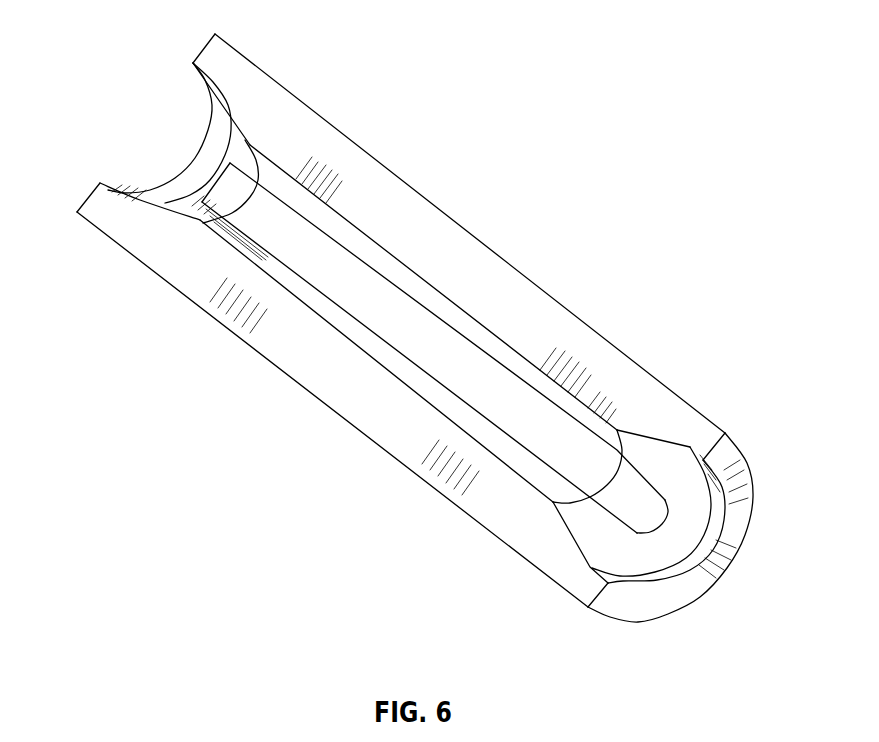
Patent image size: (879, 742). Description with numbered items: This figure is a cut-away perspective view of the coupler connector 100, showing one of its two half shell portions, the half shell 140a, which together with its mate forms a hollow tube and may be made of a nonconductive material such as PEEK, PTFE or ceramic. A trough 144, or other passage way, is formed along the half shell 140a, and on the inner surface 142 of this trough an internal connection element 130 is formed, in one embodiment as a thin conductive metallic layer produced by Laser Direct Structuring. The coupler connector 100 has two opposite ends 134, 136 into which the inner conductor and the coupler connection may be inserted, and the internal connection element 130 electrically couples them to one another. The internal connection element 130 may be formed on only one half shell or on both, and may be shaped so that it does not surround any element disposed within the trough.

The coupler connector 100 is at (700, 76).
The internal connection element 130 is at (637, 530).
The end of the coupler connector 134 is at (120, 118).
The end of the coupler connector 136 is at (662, 531).
The half shell portion 140a is at (447, 232).
The inner surface 142 is at (316, 302).
The trough 144 is at (192, 186).